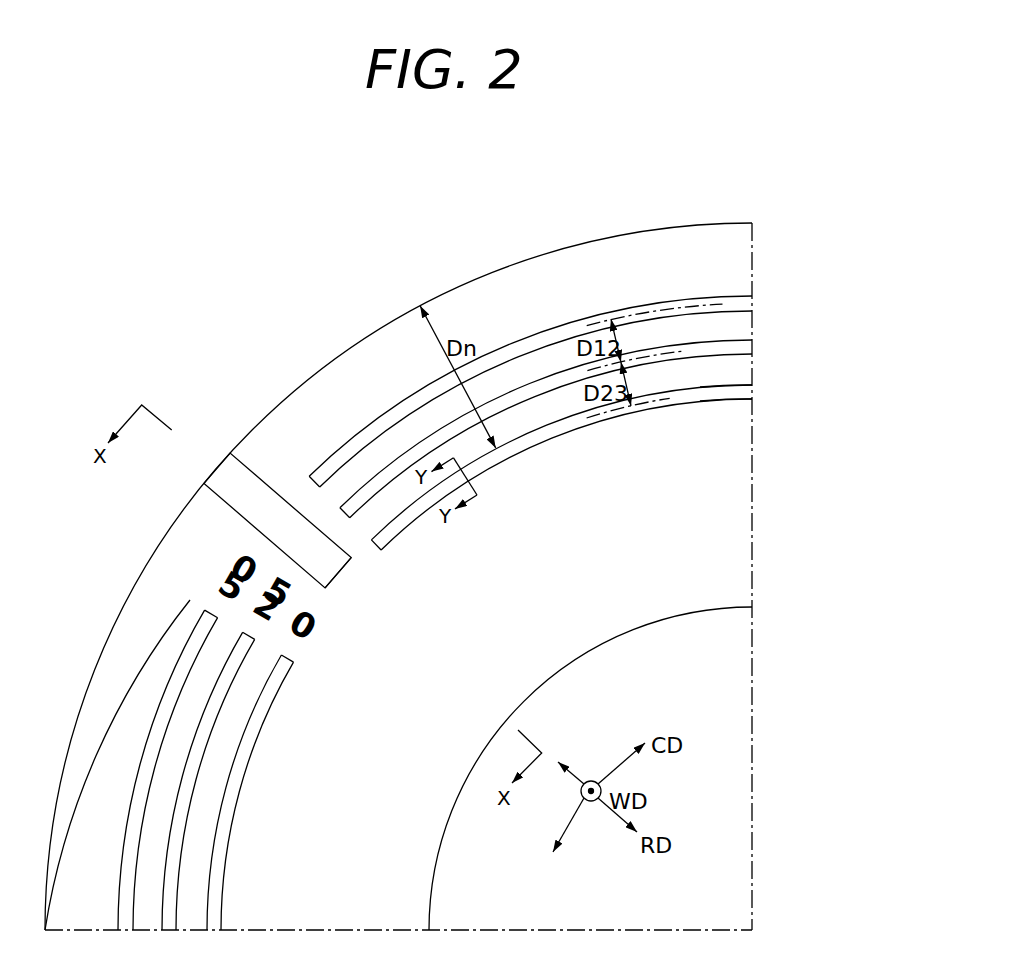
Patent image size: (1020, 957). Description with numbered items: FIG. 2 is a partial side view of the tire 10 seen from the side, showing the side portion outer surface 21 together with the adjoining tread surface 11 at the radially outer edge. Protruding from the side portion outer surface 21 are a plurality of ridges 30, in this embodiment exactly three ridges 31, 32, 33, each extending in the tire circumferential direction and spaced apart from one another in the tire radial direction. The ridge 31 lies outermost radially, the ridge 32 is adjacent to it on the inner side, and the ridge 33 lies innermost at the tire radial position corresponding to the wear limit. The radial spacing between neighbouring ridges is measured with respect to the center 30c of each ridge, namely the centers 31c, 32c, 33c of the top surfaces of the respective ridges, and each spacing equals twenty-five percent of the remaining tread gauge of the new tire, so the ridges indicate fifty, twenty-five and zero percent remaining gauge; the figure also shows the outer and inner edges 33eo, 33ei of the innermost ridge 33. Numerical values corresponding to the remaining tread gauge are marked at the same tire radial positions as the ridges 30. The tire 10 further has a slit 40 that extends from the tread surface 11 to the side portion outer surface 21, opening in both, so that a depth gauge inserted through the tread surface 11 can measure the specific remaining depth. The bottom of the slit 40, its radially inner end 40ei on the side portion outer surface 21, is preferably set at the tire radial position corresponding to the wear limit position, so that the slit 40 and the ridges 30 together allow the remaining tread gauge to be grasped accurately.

The tire 10 is at (343, 303).
The tread surface 11 is at (148, 560).
The side portion outer surface 21 is at (133, 667).
The ridges 30 is at (481, 613).
The ridge 31 is at (323, 467).
The ridge 32 is at (362, 503).
The ridge 33 is at (412, 517).
The center of each ridge 30c is at (638, 349).
The center of ridge 31c is at (670, 308).
The center of ridge 32c is at (650, 362).
The center of ridge 33c is at (615, 412).
The outer edge of third groove 33eo is at (720, 385).
The inner edge of third groove 33ei is at (722, 405).
The slit 40 is at (255, 500).
The inner end of the slit in the tire radial direction 40ei is at (332, 580).